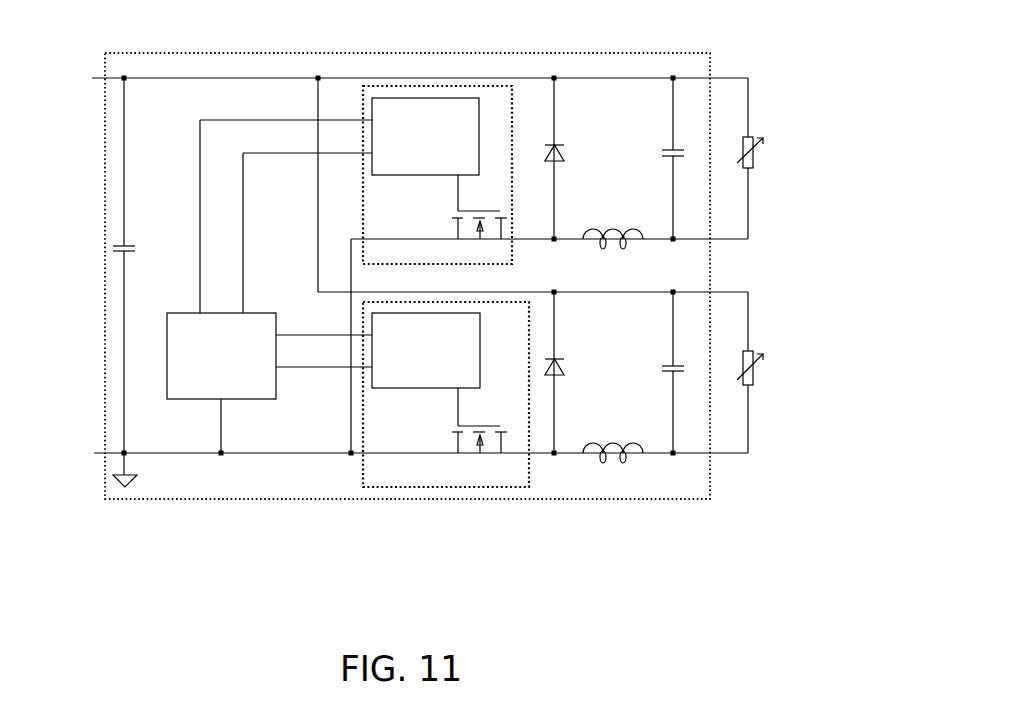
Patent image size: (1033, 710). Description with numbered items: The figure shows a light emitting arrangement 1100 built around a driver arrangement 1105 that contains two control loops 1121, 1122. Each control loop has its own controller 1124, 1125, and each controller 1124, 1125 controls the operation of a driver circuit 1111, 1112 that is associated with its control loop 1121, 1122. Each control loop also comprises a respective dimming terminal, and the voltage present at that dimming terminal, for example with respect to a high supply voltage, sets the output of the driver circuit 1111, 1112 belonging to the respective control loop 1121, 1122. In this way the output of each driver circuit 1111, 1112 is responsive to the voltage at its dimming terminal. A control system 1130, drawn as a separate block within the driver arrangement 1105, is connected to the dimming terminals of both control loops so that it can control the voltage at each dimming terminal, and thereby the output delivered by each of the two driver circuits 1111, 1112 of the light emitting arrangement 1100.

The light emitting arrangement 1100 is at (119, 593).
The driver arrangement 1105 is at (297, 500).
The driver circuit 1111 is at (616, 65).
The driver circuit 1112 is at (595, 492).
The control loop 1121 is at (363, 175).
The control loop 1122 is at (363, 395).
The controller 1124 is at (425, 136).
The controller 1125 is at (426, 350).
The control system 1130 is at (221, 356).